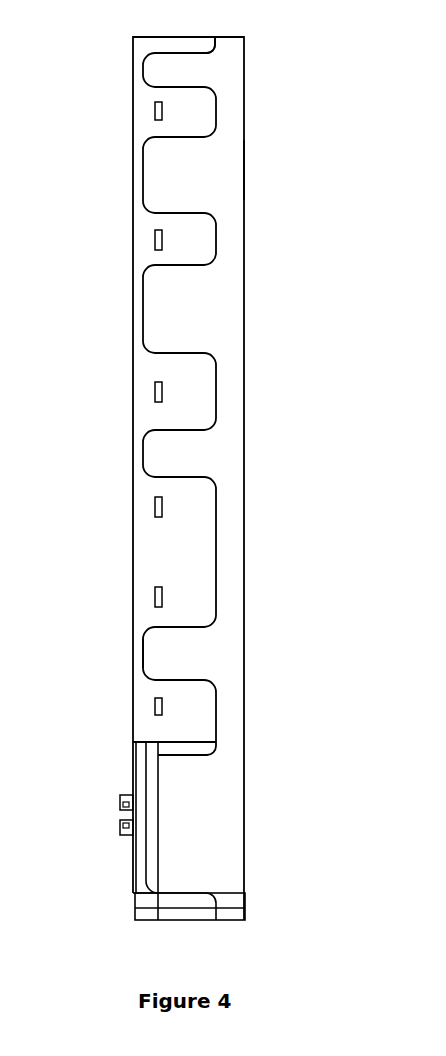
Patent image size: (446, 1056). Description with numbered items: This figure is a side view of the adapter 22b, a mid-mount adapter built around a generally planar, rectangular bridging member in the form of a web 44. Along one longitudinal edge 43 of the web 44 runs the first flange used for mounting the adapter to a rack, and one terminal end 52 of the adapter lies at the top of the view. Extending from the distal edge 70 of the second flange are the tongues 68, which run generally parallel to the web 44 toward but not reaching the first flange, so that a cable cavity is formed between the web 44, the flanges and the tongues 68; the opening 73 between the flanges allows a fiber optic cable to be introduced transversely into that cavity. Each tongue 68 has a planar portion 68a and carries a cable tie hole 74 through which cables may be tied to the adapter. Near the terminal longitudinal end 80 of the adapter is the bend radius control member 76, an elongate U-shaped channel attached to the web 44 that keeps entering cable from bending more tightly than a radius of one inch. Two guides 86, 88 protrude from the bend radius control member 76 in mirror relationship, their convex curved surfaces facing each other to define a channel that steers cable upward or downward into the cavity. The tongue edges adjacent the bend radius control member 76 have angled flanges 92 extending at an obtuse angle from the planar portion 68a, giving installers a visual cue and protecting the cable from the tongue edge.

The adapter 22b is at (259, 683).
The longitudinal edge 43 is at (244, 240).
The web 44 is at (227, 168).
The opening 73 is at (230, 52).
The terminal end 52 is at (153, 43).
The tongue 68 is at (183, 127).
The planar portion 68a is at (157, 573).
The cable tie hole 74 is at (155, 238).
The distal edge 70 is at (137, 697).
The bend radius control member 76 is at (133, 757).
The angled flange 92 is at (218, 752).
The terminal longitudinal end 80 is at (217, 835).
The first guide 86 is at (120, 798).
The second guide 88 is at (120, 833).